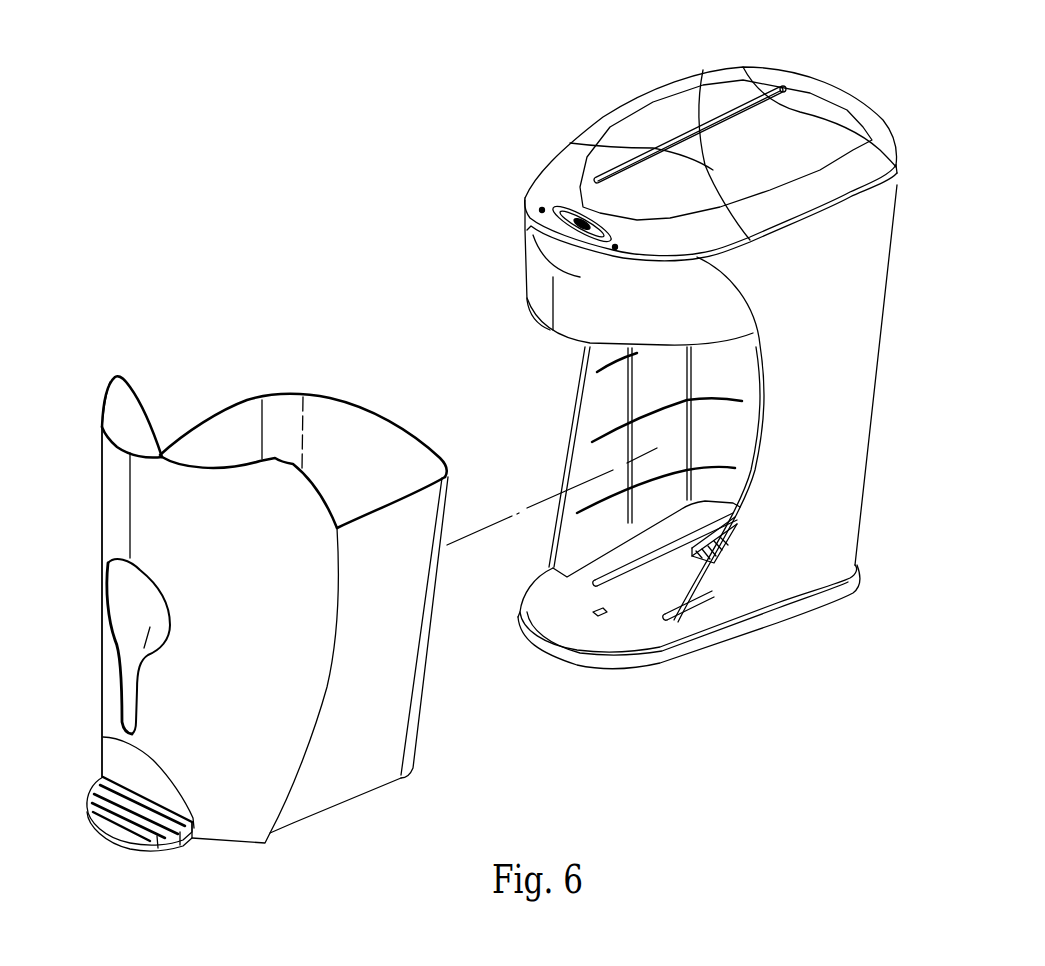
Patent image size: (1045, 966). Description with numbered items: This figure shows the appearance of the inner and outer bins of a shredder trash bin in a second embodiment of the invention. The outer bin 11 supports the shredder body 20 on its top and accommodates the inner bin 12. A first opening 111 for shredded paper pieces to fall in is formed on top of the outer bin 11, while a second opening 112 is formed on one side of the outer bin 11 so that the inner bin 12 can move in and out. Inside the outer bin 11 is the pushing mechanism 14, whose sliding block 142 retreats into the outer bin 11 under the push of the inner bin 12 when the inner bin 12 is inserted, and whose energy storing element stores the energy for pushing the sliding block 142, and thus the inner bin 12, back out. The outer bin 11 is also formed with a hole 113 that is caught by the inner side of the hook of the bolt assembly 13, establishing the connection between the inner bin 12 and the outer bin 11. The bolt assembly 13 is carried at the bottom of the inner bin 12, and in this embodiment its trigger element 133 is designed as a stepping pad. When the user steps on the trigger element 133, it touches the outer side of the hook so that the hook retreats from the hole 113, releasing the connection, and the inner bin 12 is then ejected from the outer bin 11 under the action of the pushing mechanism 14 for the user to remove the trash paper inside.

The outer bin 11 is at (772, 587).
The first opening 111 is at (847, 197).
The second opening 112 is at (593, 407).
The hole 113 is at (597, 610).
The pushing mechanism 14 is at (710, 573).
The sliding block 142 is at (707, 557).
The shredder body 20 is at (645, 102).
The inner bin 12 is at (210, 430).
The bolt assembly 13 is at (165, 842).
The trigger element 133 is at (130, 849).